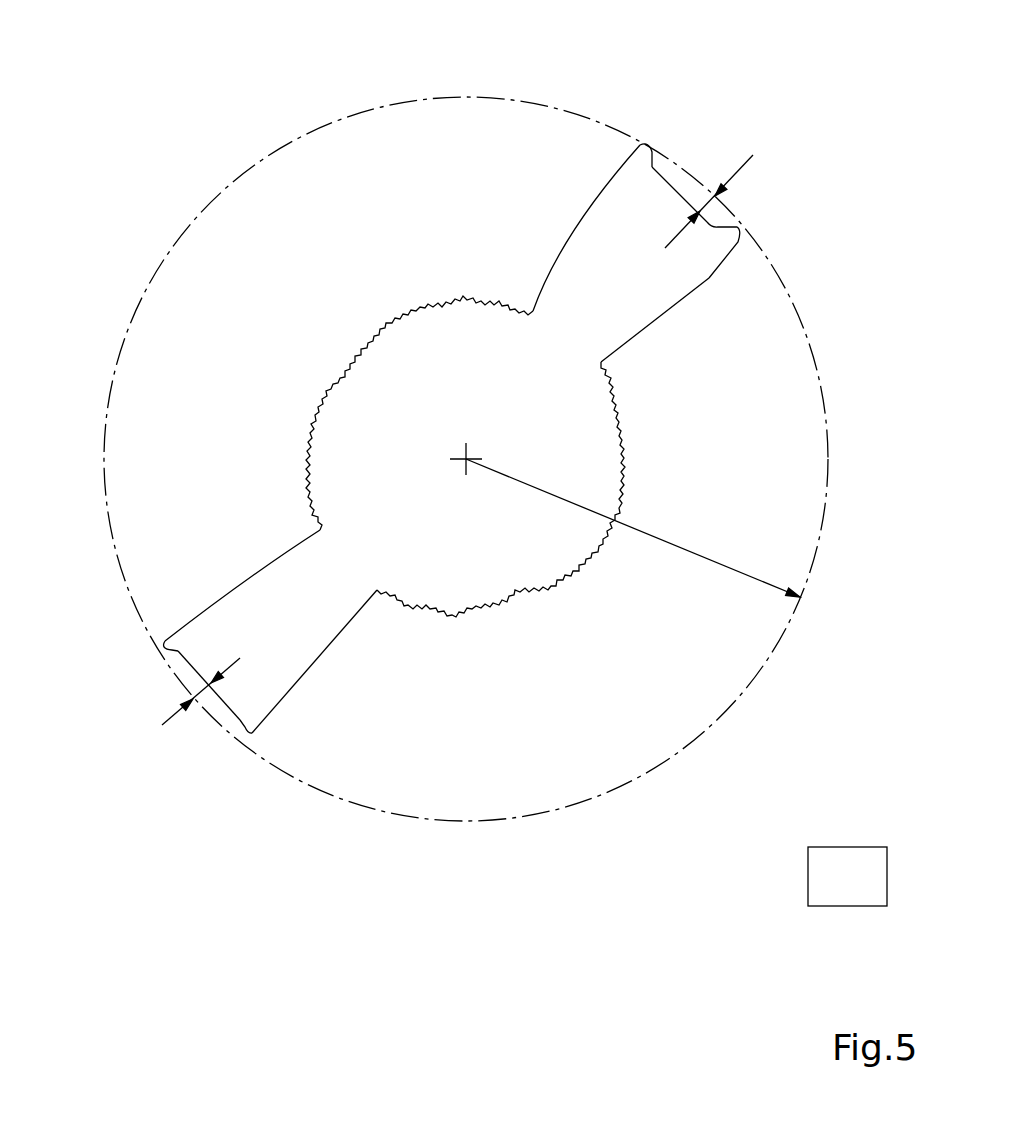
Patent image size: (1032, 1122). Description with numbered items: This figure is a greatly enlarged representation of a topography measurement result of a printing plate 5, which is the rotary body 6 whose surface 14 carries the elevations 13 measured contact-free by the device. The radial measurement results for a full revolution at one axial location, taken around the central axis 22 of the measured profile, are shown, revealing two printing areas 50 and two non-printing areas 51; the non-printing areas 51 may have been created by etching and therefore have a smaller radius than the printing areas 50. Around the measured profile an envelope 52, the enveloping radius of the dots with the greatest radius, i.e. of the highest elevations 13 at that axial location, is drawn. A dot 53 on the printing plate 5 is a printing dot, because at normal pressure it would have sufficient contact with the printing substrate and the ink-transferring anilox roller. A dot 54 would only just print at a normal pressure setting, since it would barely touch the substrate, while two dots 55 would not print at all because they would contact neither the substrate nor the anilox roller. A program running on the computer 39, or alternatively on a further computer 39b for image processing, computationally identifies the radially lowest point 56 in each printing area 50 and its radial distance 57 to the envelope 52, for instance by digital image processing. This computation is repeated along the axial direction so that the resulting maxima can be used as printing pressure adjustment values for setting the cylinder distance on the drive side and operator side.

The printing plate 5 is at (450, 363).
The rotary body 6 is at (471, 446).
The elevations 13 is at (599, 238).
The surface 14 is at (328, 390).
The central axis 22 is at (465, 462).
The computer 39 is at (804, 905).
The further computer 39b is at (843, 897).
The printing area 50 is at (637, 298).
The non-printing area 51 is at (385, 322).
The envelope 52 is at (727, 562).
The dot 53 is at (650, 143).
The dot 54 is at (740, 225).
The dots 55 is at (248, 733).
The radially lowest point 56 is at (722, 216).
The radial distance 57 is at (742, 165).